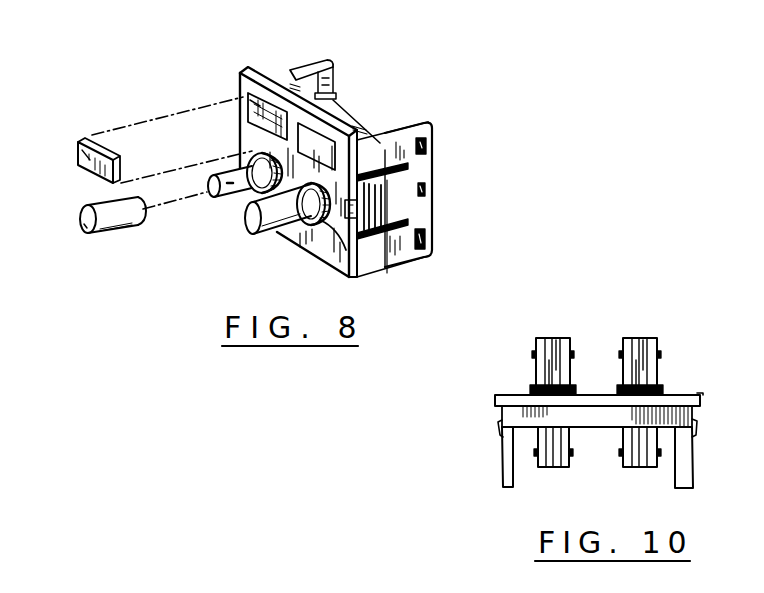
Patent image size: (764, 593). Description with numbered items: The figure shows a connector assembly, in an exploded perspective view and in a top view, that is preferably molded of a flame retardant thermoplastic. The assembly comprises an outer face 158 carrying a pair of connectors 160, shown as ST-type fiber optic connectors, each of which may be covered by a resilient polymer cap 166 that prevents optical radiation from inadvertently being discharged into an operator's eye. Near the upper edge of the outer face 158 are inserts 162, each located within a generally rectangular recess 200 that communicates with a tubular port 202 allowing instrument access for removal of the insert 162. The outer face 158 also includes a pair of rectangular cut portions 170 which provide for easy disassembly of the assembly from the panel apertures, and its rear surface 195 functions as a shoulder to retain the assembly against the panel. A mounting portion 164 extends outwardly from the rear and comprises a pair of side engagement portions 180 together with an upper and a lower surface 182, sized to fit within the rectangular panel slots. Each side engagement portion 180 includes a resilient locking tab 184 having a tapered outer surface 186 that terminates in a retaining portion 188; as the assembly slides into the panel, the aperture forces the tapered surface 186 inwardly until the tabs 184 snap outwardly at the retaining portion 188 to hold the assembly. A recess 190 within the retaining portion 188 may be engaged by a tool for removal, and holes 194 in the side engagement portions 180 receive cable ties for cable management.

In FIG. 8, the outer face 158 is at (338, 262).
In FIG. 10, the outer face 158 is at (515, 393).
In FIG. 8, the connector 160 is at (212, 205).
In FIG. 10, the connector 160 is at (577, 312).
In FIG. 8, the insert 162 is at (80, 170).
In FIG. 8, the mounting portion 164 is at (432, 230).
In FIG. 10, the mounting portion 164 is at (692, 477).
In FIG. 8, the cap 166 is at (245, 237).
In FIG. 8, the rectangular cut portion 170 is at (238, 142).
In FIG. 10, the side engagement portion 180 is at (500, 486).
In FIG. 10, the upper and lower surface 182 is at (607, 416).
In FIG. 8, the resilient locking tab 184 is at (406, 176).
In FIG. 10, the resilient locking tab 184 is at (499, 429).
In FIG. 8, the tapered outer surface 186 is at (394, 207).
In FIG. 8, the retaining portion 188 is at (394, 133).
In FIG. 8, the recess 190 is at (377, 264).
In FIG. 8, the hole 194 is at (333, 79).
In FIG. 10, the rear surface 195 is at (494, 411).
In FIG. 8, the recess 200 is at (242, 110).
In FIG. 8, the tubular port 202 is at (250, 104).